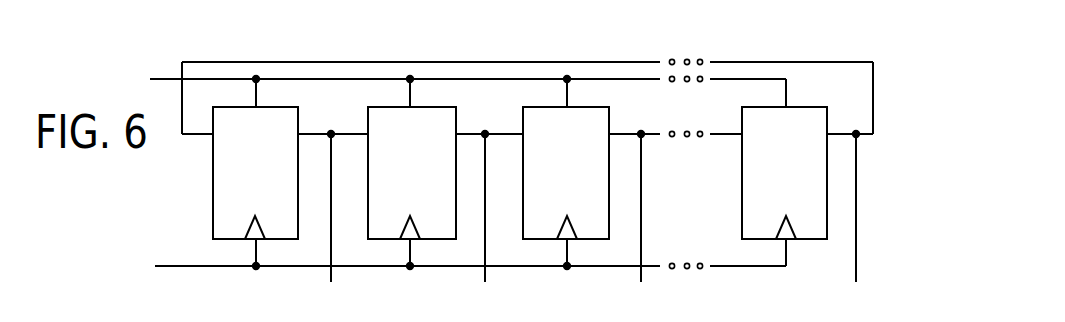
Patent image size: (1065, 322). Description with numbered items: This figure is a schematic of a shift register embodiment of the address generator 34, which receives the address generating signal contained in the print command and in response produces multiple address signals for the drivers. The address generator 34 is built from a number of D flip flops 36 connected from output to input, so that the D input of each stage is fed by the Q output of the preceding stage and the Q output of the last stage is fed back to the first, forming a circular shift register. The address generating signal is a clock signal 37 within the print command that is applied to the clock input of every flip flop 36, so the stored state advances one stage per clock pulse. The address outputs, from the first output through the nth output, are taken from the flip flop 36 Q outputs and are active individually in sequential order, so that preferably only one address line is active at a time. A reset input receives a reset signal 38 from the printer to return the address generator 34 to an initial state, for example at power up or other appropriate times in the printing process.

The address generator 34 is at (814, 43).
The D flip flop 36 is at (213, 180).
The clock signal 37 is at (215, 268).
The reset signal 38 is at (171, 78).